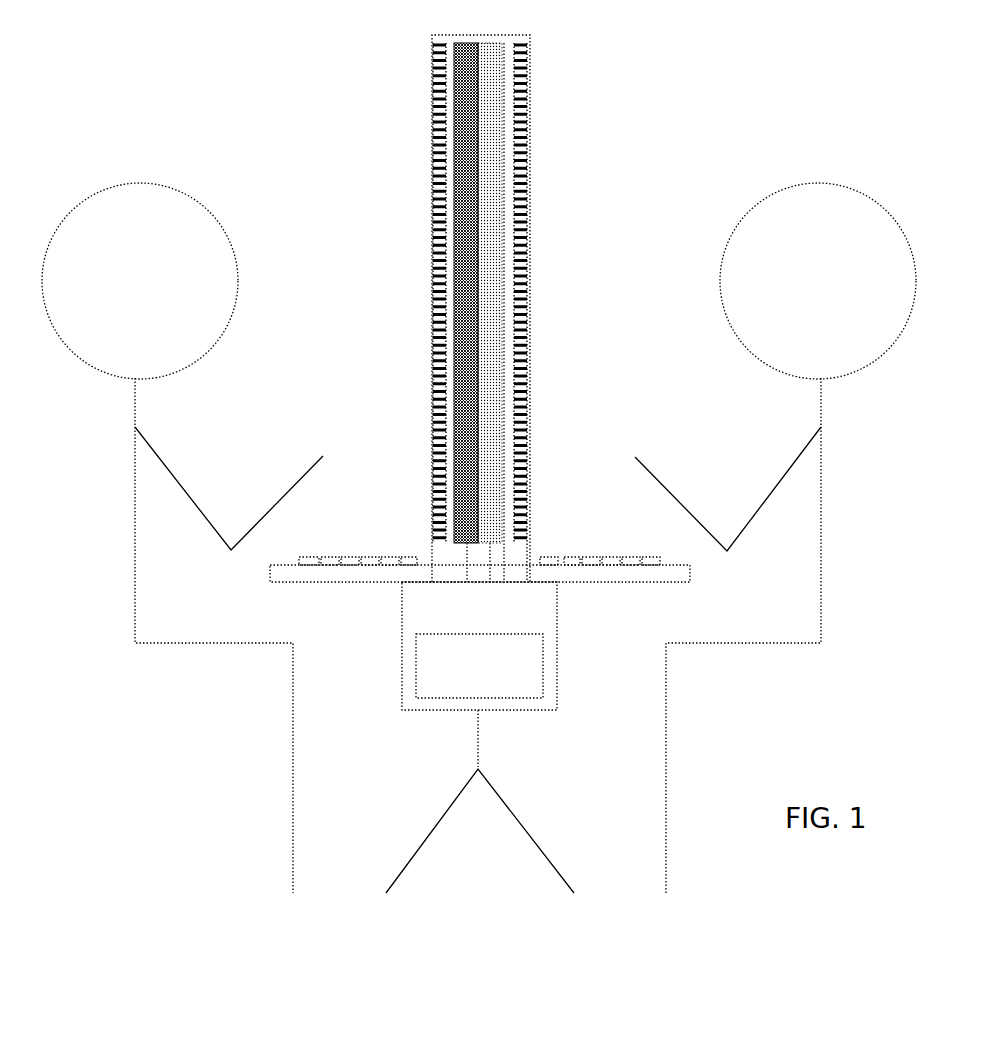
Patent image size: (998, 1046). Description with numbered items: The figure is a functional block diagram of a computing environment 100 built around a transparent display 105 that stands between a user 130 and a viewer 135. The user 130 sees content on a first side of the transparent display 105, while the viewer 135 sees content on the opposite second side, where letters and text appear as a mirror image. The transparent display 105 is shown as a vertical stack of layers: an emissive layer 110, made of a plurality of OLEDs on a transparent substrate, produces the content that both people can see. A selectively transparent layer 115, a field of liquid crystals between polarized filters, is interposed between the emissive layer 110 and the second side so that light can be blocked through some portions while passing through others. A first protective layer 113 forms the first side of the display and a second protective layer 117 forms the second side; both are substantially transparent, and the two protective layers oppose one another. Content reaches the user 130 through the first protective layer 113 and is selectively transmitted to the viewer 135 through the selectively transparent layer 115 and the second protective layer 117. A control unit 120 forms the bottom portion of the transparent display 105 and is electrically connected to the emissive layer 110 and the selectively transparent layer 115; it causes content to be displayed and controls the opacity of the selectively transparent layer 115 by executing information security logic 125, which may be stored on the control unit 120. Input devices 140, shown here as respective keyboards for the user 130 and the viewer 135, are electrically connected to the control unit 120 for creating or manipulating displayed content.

The computing environment 100 is at (873, 118).
The transparent display 105 is at (530, 36).
The emissive layer 110 is at (503, 104).
The first protective layer 113 is at (528, 170).
The selectively transparent layer 115 is at (452, 56).
The second protective layer 117 is at (433, 158).
The control unit 120 is at (557, 598).
The information security logic 125 is at (543, 657).
The user 130 is at (750, 210).
The viewer 135 is at (205, 207).
The input devices 140 is at (270, 577).